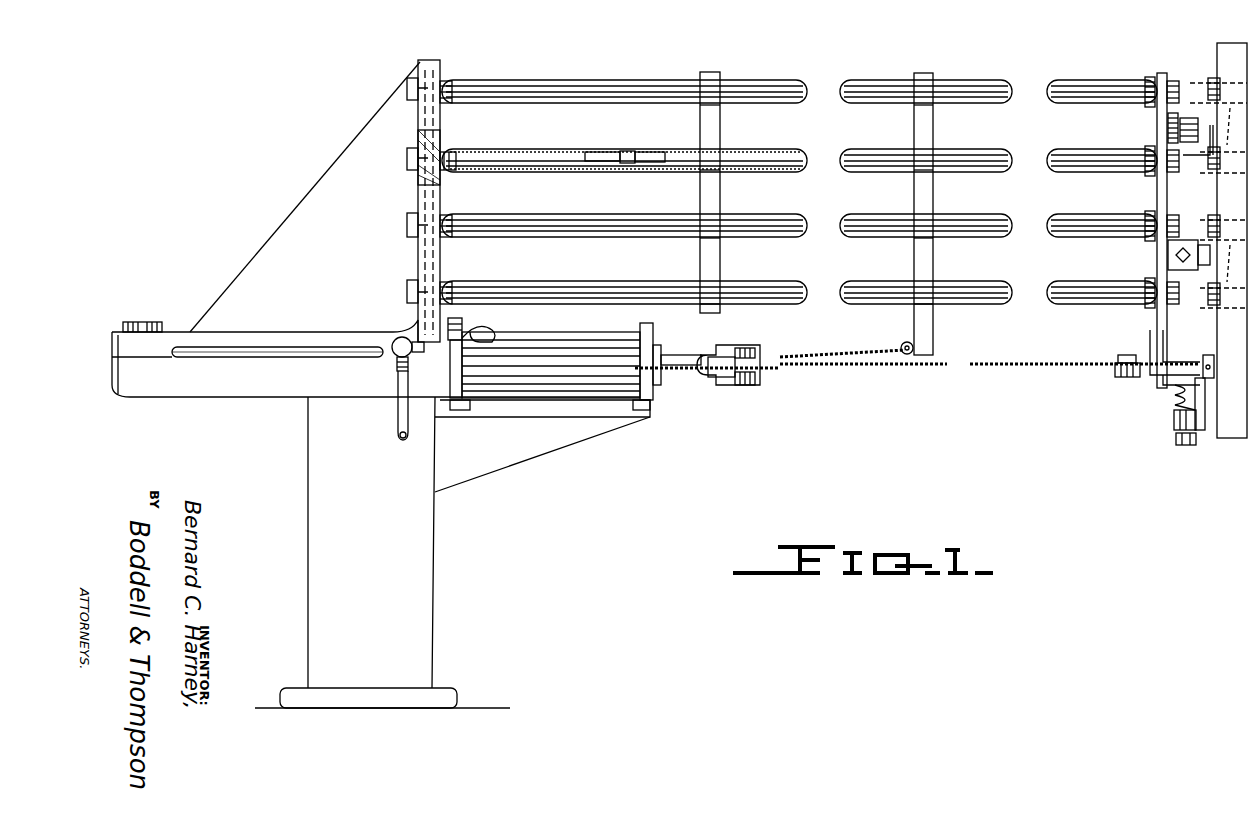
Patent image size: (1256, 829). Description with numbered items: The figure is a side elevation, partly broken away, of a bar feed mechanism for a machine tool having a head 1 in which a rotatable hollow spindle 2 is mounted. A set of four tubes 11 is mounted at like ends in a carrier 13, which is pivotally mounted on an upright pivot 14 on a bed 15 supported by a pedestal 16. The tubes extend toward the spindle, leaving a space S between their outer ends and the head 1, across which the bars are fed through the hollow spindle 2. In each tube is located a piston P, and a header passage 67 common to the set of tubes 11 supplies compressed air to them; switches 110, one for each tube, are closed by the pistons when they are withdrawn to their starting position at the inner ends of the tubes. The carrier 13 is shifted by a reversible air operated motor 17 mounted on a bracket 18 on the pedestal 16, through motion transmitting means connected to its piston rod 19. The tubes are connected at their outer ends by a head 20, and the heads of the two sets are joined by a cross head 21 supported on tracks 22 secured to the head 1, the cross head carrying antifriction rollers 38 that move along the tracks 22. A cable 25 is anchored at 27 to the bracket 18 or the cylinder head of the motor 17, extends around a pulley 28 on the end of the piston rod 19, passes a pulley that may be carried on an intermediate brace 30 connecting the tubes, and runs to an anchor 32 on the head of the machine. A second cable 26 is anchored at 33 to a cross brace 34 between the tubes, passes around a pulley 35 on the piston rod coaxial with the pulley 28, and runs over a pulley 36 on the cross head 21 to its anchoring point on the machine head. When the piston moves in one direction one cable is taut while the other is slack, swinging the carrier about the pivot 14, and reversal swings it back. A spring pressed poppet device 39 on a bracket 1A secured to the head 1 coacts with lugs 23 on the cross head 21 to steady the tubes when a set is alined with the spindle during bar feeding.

The head 1 is at (1235, 45).
The bracket 1A is at (1174, 418).
The hollow spindle 2 is at (1228, 201).
The space S is at (1200, 86).
The tubes 11 is at (548, 108).
The carrier 13 is at (300, 199).
The upright pivot 14 is at (143, 322).
The bed 15 is at (232, 393).
The pedestal 16 is at (313, 535).
The reversible air operated motor 17 is at (565, 335).
The bracket 18 is at (522, 458).
The piston rod 19 is at (675, 355).
The head 20 is at (1157, 198).
The cross head 21 is at (1170, 340).
The tracks 22 is at (1205, 158).
The lugs 23 is at (1165, 385).
The cable 25 is at (678, 370).
The cable 26 is at (840, 352).
The anchor 27 is at (650, 395).
The pulley 28 is at (762, 377).
The intermediate brace 30 is at (720, 198).
The anchor 32 is at (1207, 357).
The anchor 33 is at (907, 342).
The cross brace 34 is at (934, 200).
The pulley 35 is at (765, 357).
The pulley 36 is at (1112, 370).
The rollers 38 is at (1190, 118).
The spring pressed poppet device 39 is at (1188, 446).
The header passage 67 is at (416, 255).
The switches 110 is at (404, 219).
The piston P is at (448, 172).